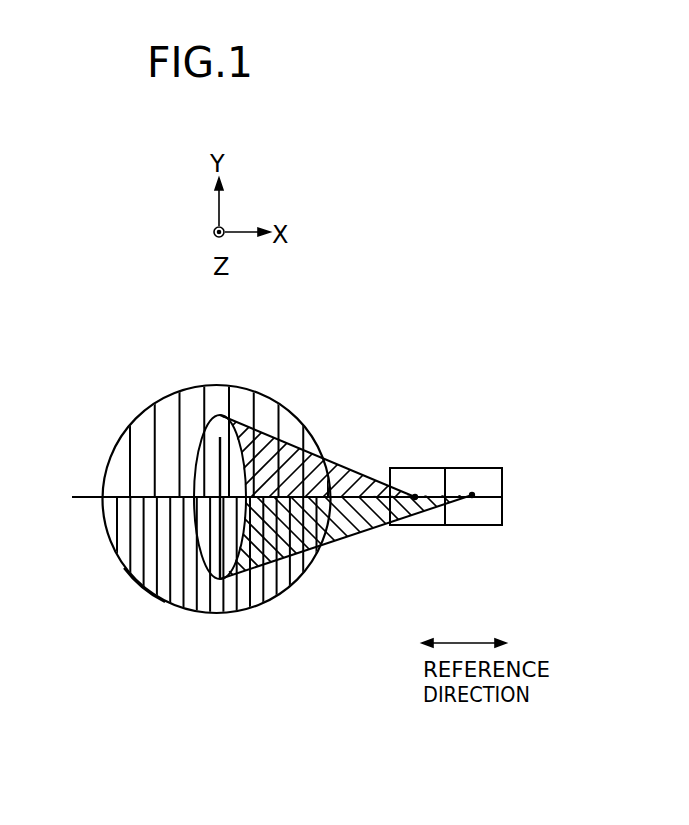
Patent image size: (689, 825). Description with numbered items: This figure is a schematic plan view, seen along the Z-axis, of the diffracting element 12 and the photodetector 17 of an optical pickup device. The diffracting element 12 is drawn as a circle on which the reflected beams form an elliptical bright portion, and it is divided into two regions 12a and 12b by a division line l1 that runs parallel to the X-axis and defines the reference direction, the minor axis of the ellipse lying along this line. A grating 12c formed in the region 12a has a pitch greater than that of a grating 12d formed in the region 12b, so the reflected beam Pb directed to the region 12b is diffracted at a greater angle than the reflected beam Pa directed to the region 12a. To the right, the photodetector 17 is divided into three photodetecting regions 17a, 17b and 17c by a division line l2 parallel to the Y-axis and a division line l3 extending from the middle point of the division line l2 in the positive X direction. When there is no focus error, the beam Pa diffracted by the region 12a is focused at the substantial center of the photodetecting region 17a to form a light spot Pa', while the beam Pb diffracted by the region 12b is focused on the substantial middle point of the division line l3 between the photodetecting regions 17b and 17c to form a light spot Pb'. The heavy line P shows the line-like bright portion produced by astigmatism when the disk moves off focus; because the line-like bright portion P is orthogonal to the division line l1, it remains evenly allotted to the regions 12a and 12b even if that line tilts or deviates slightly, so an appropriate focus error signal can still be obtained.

The diffracting element 12 is at (110, 448).
The region 12a is at (192, 397).
The region 12b is at (165, 592).
The grating 12c is at (148, 417).
The grating 12d is at (124, 568).
The line-like bright portion P is at (220, 517).
The reflected beam Pa is at (275, 473).
The reflected beam Pb is at (302, 539).
The light spot Pa' is at (456, 437).
The light spot Pb' is at (471, 550).
The division line l1 is at (270, 502).
The division line l2 is at (442, 525).
The division line l3 is at (502, 502).
The photodetector 17 is at (474, 458).
The photodetecting region 17a is at (408, 470).
The photodetecting region 17b is at (492, 480).
The photodetecting region 17c is at (477, 517).